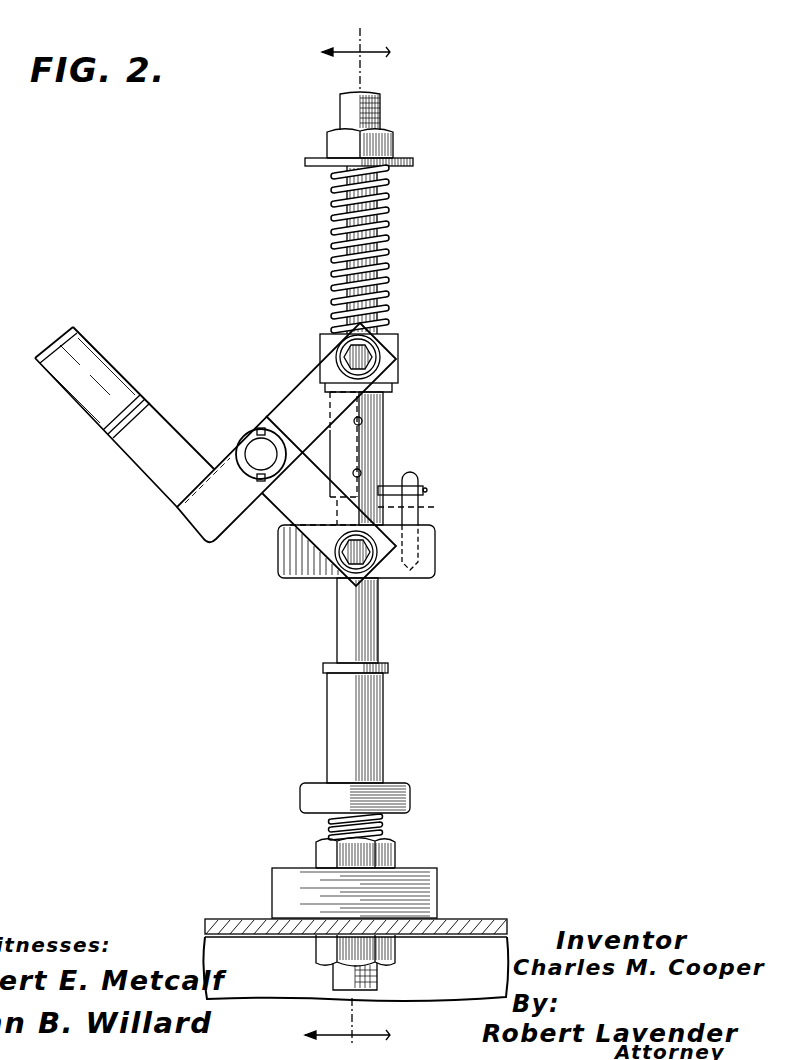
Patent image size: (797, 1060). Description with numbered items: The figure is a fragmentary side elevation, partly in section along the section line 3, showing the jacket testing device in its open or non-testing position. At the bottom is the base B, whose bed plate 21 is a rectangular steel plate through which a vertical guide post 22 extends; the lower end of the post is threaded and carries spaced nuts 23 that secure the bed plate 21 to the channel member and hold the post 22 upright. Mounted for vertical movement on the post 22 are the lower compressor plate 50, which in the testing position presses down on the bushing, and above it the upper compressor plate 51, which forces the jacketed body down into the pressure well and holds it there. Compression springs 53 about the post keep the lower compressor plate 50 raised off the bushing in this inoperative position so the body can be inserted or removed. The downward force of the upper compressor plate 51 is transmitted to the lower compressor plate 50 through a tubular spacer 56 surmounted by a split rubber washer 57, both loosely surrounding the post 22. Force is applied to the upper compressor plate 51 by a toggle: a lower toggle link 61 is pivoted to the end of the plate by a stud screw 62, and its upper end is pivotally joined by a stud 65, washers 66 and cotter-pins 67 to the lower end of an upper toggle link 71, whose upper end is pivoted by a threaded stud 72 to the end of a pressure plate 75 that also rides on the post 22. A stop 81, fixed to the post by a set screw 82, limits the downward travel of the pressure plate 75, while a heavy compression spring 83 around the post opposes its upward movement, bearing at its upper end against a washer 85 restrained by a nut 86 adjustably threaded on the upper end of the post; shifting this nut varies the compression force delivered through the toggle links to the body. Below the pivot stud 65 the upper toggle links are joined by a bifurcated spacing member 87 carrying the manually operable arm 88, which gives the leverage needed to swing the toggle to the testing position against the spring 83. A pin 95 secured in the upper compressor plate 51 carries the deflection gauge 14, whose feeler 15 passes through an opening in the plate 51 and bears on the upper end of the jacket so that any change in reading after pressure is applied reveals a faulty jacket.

The section line 3- 3 is at (347, 531).
The deflection gauge 14 is at (357, 483).
The feeler 15 is at (383, 509).
The bed plate 21 is at (437, 888).
The guide posts 22 is at (378, 637).
The nuts 23 is at (393, 852).
The lower compressor plate 50 is at (410, 795).
The upper compressor plate 51 is at (440, 562).
The compression springs 53 is at (383, 822).
The tubular spacers 56 is at (375, 732).
The split rubber washers 57 is at (388, 668).
The lower toggle link 61 is at (287, 500).
The stud screw 62 is at (340, 557).
The stud 65 is at (255, 462).
The washers 66 is at (243, 452).
The cotter-pins 67 is at (253, 433).
The upper toggle link 71 is at (293, 391).
The threaded stud 72 is at (385, 363).
The pressure plate 75 is at (396, 345).
The stops 81 is at (372, 438).
The set screws 82 is at (362, 418).
The heavy compression springs 83 is at (388, 262).
The washers 85 is at (415, 163).
The nuts 86 is at (388, 140).
The bifurcated spacing member 87 is at (138, 447).
The manually operable arm 88 is at (110, 387).
The pin 95 is at (417, 473).
The base B is at (243, 941).